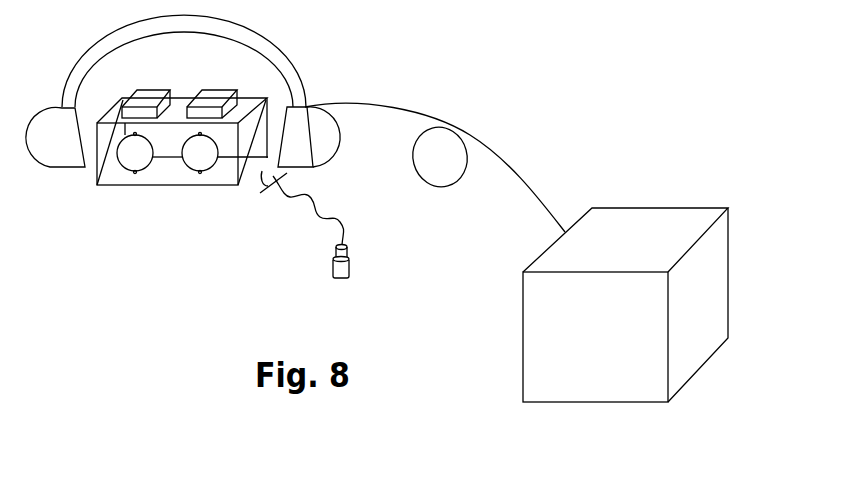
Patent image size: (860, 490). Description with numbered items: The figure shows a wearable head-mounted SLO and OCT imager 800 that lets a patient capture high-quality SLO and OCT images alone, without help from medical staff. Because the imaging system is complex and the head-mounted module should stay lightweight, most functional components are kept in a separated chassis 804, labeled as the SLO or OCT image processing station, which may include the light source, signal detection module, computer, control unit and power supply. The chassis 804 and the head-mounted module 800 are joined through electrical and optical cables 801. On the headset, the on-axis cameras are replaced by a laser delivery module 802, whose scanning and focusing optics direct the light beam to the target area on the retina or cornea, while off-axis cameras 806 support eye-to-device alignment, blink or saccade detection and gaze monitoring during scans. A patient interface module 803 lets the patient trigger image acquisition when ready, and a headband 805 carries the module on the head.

The wearable head-mounted SLO and OCT imager 800 is at (112, 103).
The electrical and optical cables 801 is at (493, 155).
The laser delivery module 802 is at (210, 100).
The patient interface module 803 is at (345, 264).
The separated chassis 804 is at (665, 240).
The headband 805 is at (290, 66).
The off-axis cameras 806 is at (180, 140).